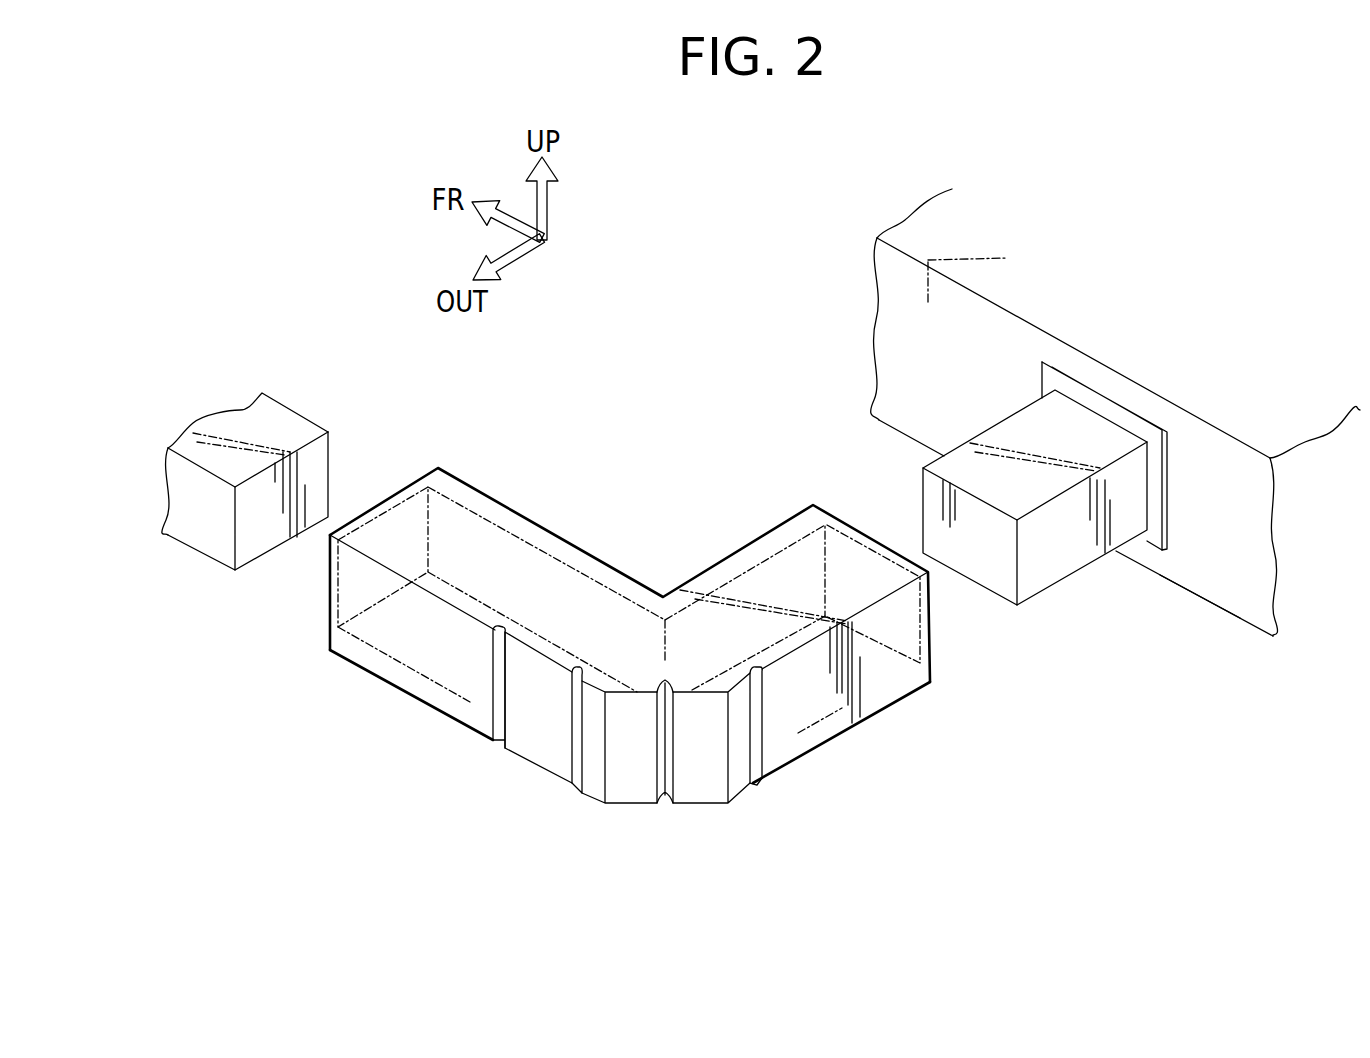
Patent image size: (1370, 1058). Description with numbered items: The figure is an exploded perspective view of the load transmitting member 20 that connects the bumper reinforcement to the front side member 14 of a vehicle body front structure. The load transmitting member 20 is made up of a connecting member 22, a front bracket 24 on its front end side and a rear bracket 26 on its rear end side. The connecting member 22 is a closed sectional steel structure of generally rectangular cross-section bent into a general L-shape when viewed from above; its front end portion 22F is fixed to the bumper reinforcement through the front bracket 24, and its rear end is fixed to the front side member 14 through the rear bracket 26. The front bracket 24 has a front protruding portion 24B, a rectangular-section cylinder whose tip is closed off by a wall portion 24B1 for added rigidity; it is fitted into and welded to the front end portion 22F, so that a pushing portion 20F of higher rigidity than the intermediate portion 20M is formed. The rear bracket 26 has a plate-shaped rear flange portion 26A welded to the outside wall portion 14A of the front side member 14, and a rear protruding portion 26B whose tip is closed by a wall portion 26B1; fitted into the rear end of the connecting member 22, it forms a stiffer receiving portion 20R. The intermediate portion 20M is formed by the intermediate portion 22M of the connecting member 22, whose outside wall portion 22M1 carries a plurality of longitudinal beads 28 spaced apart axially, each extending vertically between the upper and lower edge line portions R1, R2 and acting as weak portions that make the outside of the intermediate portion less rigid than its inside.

The front side member 14 is at (1287, 404).
The outside wall portion 14A is at (1221, 576).
The load transmitting member 20 is at (722, 350).
The pushing portion 20F is at (239, 700).
The receiving portion 20R is at (1010, 719).
The intermediate portion 20M is at (717, 838).
The connecting member 22 is at (610, 552).
The front end portion 22F is at (477, 488).
The intermediate portion 22M is at (687, 715).
The outside wall portion 22M1 is at (545, 742).
The front bracket 24 is at (286, 387).
The front protruding portion 24B is at (200, 533).
The wall portion 24B1 is at (268, 534).
The rear bracket 26 is at (1133, 583).
The rear flange portion 26A is at (1133, 410).
The rear protruding portion 26B is at (1060, 556).
The wall portion 26B1 is at (988, 574).
The longitudinal bead 28 is at (500, 697).
The upper edge line portion R1 is at (468, 616).
The lower edge line portion R2 is at (422, 703).